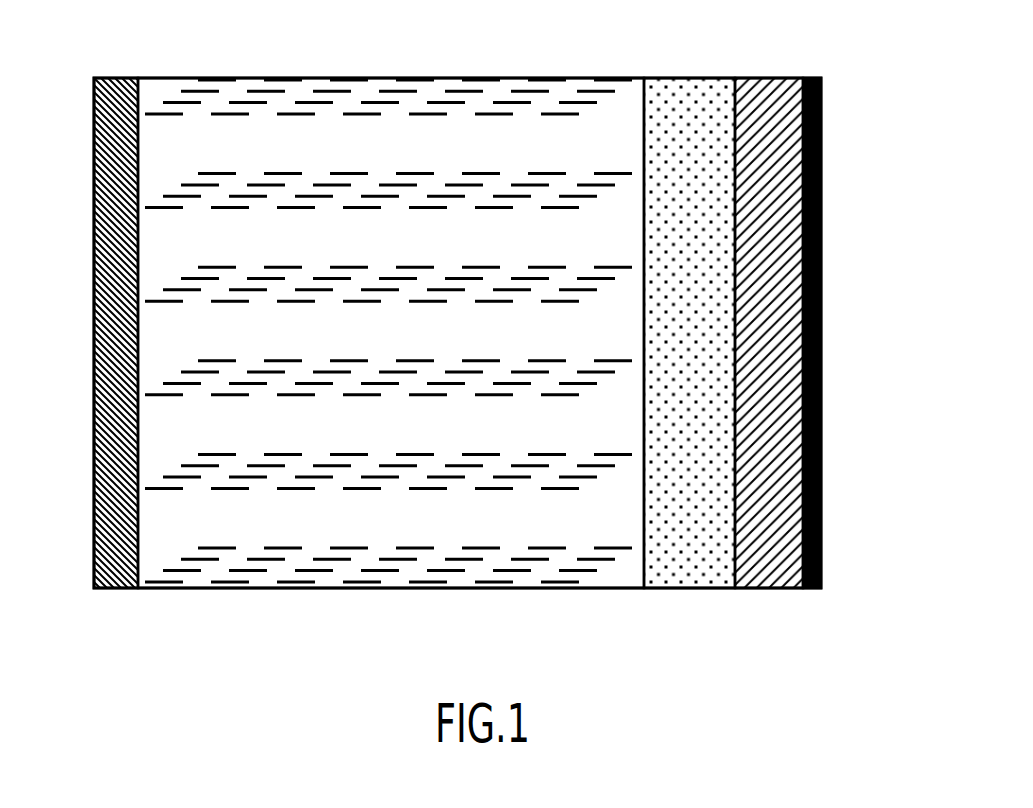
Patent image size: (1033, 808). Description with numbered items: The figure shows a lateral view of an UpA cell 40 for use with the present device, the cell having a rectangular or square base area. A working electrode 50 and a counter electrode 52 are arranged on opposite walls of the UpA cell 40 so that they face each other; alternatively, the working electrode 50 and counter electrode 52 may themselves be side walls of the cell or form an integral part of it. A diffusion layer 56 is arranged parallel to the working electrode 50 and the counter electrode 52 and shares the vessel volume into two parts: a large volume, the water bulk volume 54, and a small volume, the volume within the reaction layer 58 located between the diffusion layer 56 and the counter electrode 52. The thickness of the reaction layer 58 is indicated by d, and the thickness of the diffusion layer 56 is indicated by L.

The UpA cell 40 is at (851, 318).
The working electrode 50 is at (86, 69).
The counter electrode 52 is at (831, 136).
The water bulk volume 54 is at (334, 137).
The diffusion layer 56 is at (665, 66).
The reaction layer 58 is at (777, 599).
The thickness of reaction layer d is at (741, 61).
The thickness of diffusion layer L is at (729, 604).